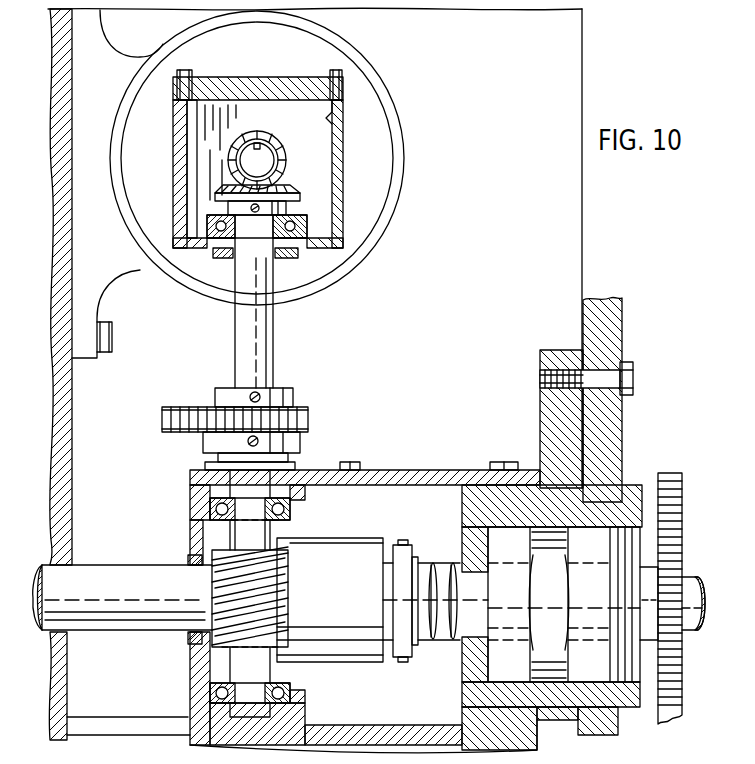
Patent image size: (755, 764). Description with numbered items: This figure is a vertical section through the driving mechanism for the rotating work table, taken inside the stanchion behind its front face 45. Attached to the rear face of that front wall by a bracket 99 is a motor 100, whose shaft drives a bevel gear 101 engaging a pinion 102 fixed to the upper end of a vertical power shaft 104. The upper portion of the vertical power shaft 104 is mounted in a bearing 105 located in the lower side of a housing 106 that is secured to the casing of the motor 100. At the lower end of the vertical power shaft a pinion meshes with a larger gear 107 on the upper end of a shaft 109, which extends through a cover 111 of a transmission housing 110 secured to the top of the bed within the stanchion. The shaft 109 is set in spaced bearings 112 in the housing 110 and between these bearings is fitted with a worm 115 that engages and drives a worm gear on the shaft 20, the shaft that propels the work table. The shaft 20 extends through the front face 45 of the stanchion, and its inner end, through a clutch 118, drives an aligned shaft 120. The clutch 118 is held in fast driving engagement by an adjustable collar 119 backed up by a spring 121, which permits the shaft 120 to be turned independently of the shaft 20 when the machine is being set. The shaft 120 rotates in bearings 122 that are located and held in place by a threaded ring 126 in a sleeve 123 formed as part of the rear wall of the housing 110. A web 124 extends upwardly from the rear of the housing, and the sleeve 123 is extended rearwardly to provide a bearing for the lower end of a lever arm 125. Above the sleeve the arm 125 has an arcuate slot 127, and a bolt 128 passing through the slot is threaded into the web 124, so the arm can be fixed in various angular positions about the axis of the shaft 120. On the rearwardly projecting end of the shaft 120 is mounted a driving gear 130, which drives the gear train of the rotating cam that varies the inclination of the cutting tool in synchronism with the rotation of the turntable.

The shaft 20 is at (103, 634).
The front face 45 is at (66, 458).
The bracket 99 is at (108, 272).
The motor 100 is at (192, 290).
The bevel gear 101 is at (283, 166).
The pinion 102 is at (286, 191).
The vertical power shaft 104 is at (259, 358).
The bearing 105 is at (305, 228).
The housing 106 is at (338, 182).
The gear 107 is at (312, 419).
The shaft 109 is at (280, 537).
The transmission housing 110 is at (415, 595).
The cover 111 is at (381, 472).
The bearings 112 is at (292, 511).
The worm 115 is at (282, 602).
The clutch 118 is at (341, 664).
The adjustable collar 119 is at (404, 560).
The shaft 120 is at (452, 622).
The spring 121 is at (432, 612).
The bearings 122 is at (576, 661).
The sleeve 123 is at (550, 704).
The web 124 is at (543, 394).
The lever arm 125 is at (606, 441).
The threaded ring 126 is at (642, 530).
The arcuate slot 127 is at (606, 400).
The bolt 128 is at (631, 371).
The driving gear 130 is at (672, 522).